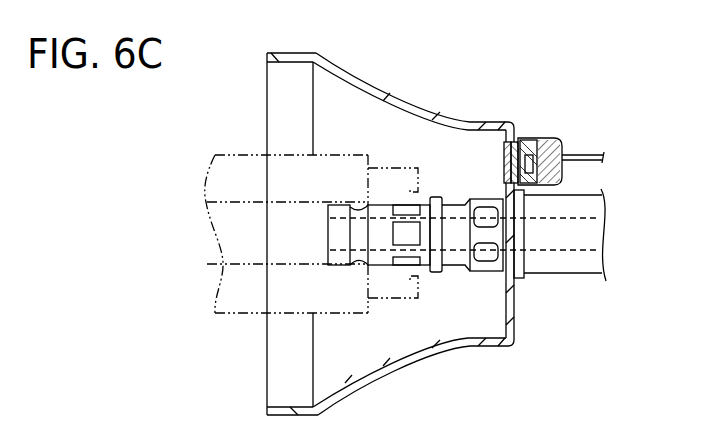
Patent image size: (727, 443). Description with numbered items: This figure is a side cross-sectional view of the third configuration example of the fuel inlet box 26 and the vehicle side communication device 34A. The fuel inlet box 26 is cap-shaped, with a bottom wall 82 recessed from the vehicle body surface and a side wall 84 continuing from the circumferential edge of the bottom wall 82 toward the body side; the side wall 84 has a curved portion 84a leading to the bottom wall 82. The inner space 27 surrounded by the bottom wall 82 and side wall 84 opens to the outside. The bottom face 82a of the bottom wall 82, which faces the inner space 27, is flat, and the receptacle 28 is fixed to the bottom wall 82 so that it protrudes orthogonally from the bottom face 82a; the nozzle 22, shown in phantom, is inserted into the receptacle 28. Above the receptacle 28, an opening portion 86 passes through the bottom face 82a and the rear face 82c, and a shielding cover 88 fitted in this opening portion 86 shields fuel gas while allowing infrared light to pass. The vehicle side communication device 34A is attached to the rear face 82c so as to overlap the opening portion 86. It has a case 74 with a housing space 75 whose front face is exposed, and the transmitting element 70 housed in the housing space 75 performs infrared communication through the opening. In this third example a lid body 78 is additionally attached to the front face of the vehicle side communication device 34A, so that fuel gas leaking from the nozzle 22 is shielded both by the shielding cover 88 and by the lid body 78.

The nozzle 22 is at (192, 196).
The fuel inlet box 26 is at (450, 230).
The inner space 27 is at (341, 369).
The receptacle 28 is at (616, 197).
The vehicle side communication device 34A is at (568, 127).
The transmitting element 70 is at (528, 138).
The case 74 is at (562, 142).
The housing space 75 is at (566, 169).
The lid body 78 is at (517, 139).
The bottom wall 82 is at (512, 236).
The bottom face 82a is at (505, 304).
The rear face 82c is at (514, 324).
The side wall 84 is at (285, 52).
The curved upper wall 84a is at (347, 82).
The opening portion 86 is at (504, 155).
The shielding cover 88 is at (510, 179).